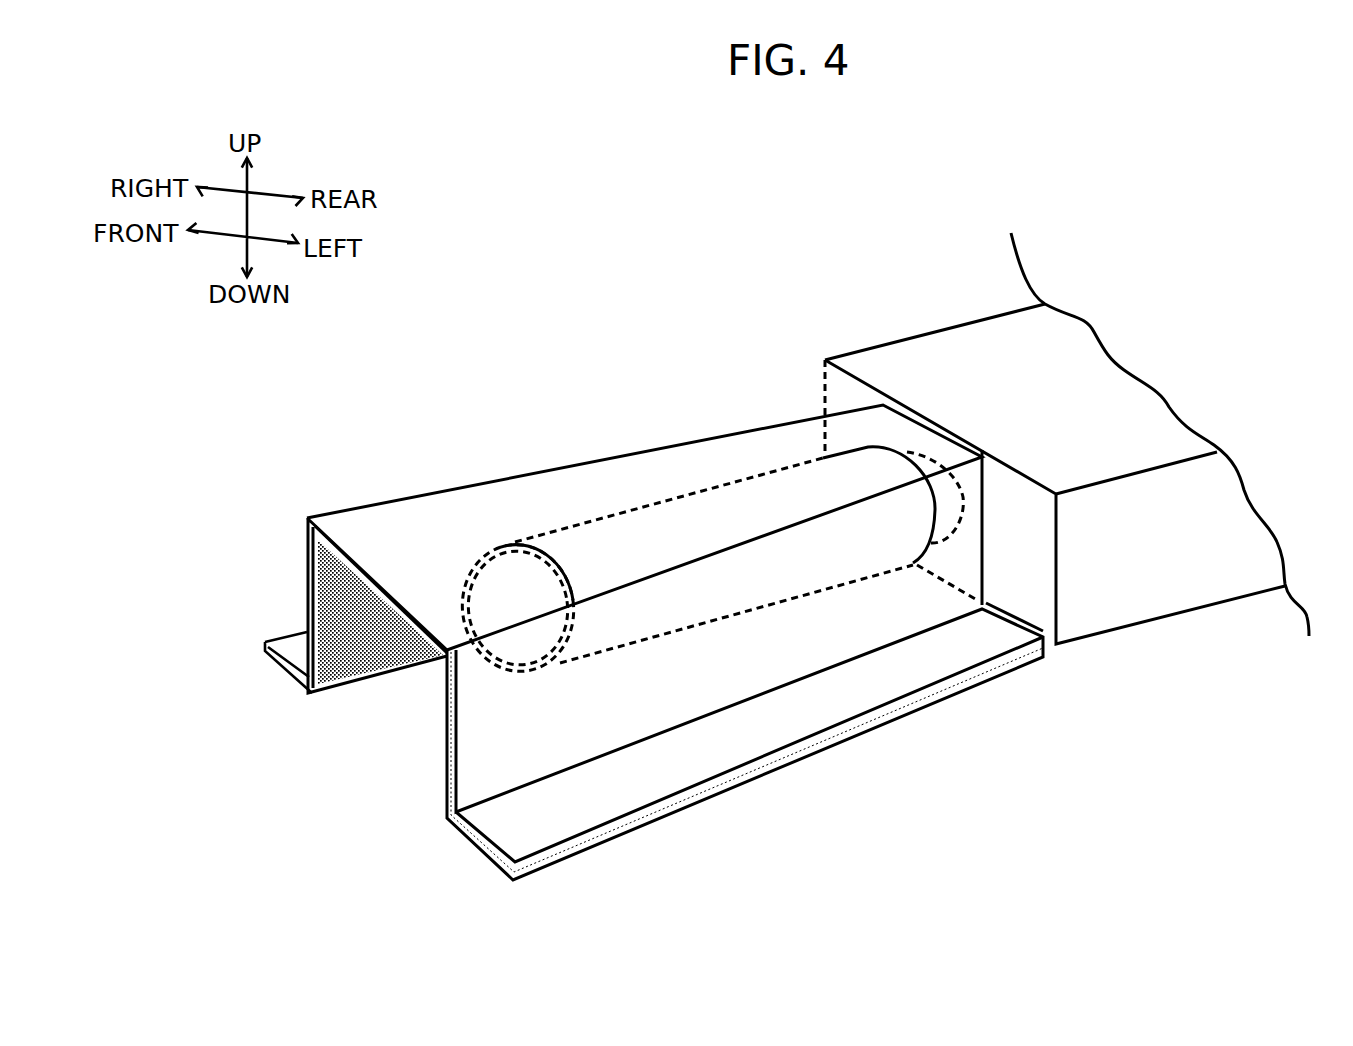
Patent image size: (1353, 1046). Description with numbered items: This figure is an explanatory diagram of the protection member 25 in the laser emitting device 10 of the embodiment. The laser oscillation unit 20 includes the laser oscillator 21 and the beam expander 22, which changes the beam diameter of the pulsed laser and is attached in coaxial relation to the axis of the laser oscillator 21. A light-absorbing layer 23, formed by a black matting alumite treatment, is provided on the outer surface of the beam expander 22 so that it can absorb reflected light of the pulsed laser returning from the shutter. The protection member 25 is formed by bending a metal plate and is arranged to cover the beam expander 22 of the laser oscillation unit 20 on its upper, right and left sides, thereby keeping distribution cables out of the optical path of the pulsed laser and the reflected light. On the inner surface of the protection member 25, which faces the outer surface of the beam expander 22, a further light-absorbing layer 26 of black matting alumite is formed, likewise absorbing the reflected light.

The holding bracket 10 is at (645, 580).
The laser oscillation unit 20 is at (1067, 440).
The laser oscillator 21 is at (1176, 599).
The beam expander 22 is at (705, 522).
The light-absorbing layer 23 is at (492, 550).
The protection member 25 is at (345, 527).
The light-absorbing layer 26 is at (445, 749).